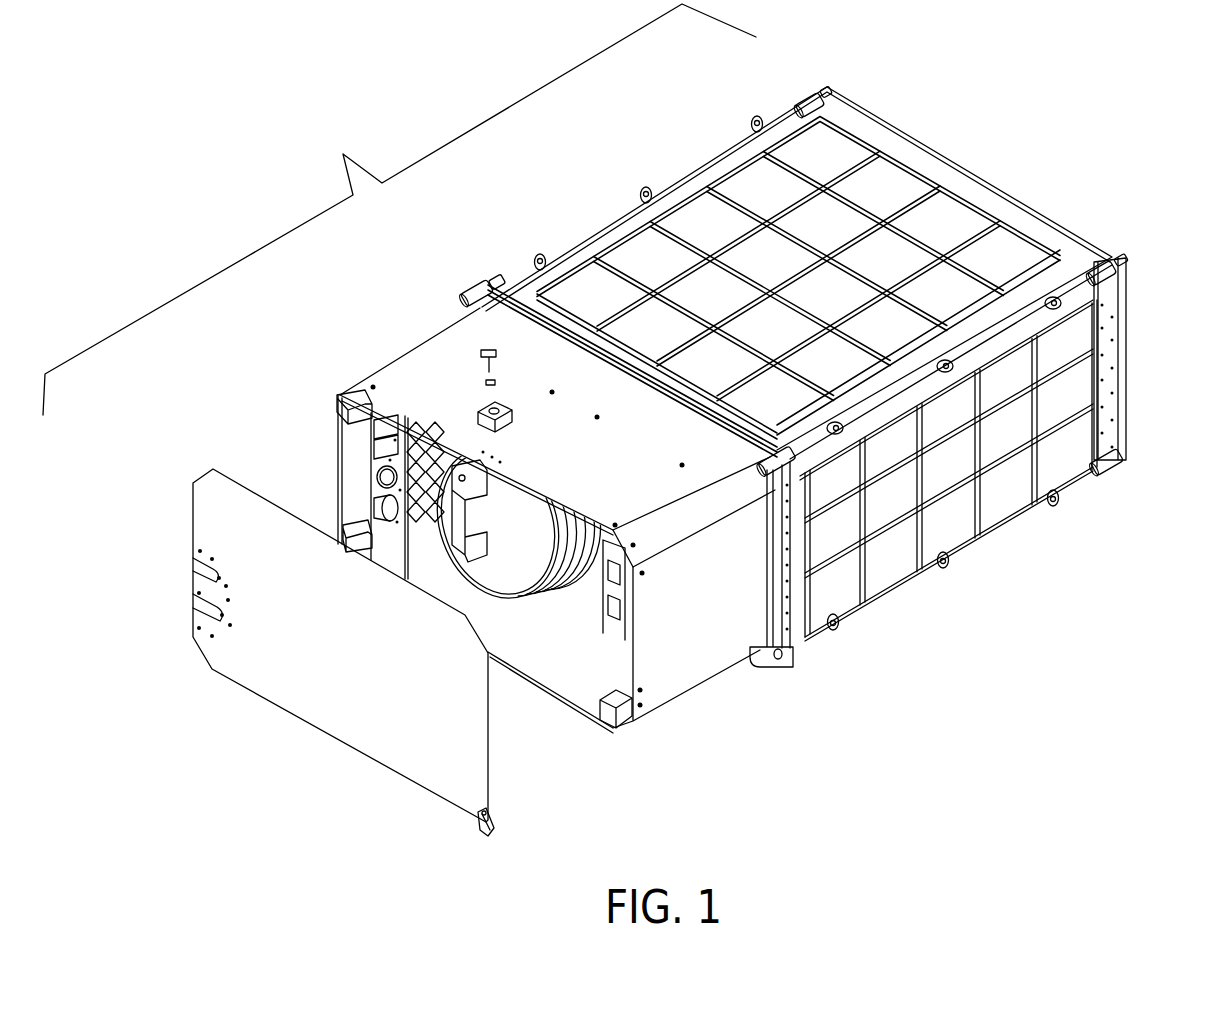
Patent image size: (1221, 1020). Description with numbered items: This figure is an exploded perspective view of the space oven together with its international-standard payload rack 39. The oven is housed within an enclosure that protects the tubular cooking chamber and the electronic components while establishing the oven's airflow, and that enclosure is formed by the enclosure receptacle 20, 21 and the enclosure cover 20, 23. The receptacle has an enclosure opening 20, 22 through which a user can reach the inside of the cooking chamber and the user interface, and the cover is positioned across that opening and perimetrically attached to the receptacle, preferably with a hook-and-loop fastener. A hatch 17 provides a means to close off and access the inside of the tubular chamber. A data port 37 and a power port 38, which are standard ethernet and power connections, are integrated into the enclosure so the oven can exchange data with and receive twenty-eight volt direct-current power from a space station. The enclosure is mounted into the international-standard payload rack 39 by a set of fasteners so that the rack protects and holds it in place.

The hatch 17 is at (547, 578).
The housing base 20, 21 is at (829, 412).
The slide-out module 20, 22 is at (526, 535).
The cover door 20, 23 is at (362, 740).
The data port 37 is at (372, 512).
The power port 38 is at (376, 478).
The international-standard payload rack 39 is at (1113, 377).